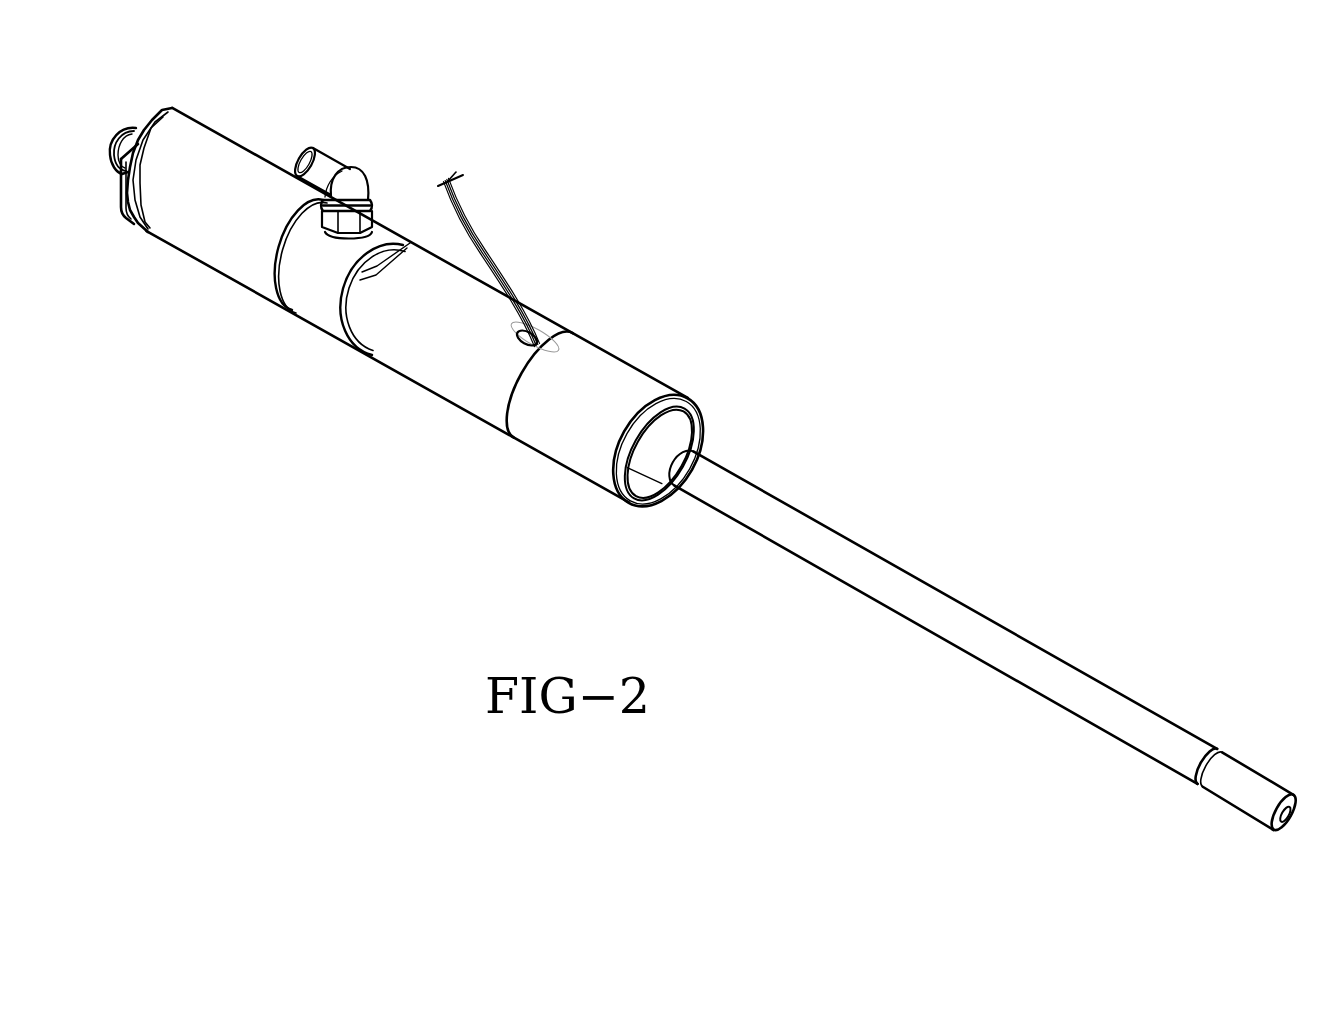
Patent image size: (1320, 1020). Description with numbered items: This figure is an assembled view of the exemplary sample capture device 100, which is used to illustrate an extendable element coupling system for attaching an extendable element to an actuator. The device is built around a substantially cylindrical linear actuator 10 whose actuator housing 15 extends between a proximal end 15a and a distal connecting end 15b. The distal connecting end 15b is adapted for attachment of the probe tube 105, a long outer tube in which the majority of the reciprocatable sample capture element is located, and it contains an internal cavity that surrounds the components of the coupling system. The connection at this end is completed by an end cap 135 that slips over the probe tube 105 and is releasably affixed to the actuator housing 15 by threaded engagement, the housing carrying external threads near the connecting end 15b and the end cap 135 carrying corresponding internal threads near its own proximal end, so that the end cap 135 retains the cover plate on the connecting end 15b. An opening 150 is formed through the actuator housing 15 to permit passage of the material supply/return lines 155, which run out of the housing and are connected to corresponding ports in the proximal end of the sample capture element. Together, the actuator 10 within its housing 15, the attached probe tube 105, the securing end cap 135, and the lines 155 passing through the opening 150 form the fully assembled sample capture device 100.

The sample capture device 100 is at (337, 433).
The actuator 10 is at (248, 295).
The actuator housing 15 is at (445, 376).
The proximal end 15a is at (212, 102).
The distal connecting end 15b is at (706, 393).
The probe tube 105 is at (935, 609).
The end cap 135 is at (578, 454).
The opening 150 is at (545, 338).
The material supply/return lines 155 is at (477, 243).